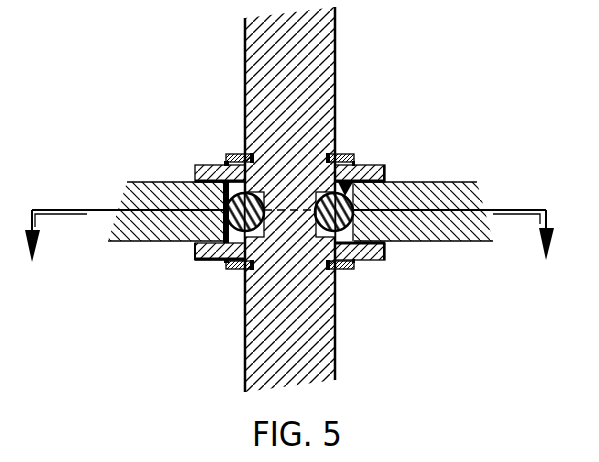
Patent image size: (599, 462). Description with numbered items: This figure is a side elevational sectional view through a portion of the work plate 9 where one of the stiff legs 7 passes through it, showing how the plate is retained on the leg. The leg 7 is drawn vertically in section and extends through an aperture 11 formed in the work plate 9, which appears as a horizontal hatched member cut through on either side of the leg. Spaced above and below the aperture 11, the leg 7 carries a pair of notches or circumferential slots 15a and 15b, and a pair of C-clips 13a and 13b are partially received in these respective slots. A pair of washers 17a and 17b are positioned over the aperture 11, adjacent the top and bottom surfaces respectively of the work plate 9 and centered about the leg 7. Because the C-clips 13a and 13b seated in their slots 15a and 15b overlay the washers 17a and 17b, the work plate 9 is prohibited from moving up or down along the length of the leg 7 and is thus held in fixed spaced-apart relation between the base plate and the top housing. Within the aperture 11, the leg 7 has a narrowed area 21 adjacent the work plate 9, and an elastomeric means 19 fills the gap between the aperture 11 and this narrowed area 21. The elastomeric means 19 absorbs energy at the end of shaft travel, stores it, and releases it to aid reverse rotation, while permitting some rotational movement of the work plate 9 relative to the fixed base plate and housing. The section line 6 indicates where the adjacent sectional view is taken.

The section line 6- 6 is at (290, 252).
The leg 7 is at (256, 90).
The work plate 9 is at (130, 200).
The aperture 11 is at (352, 263).
The C-clip 13a is at (225, 155).
The C-clip 13b is at (227, 268).
The circumferential slot 15a is at (328, 153).
The circumferential slot 15b is at (257, 268).
The washer 17a is at (200, 166).
The washer 17b is at (193, 260).
The elastomeric means 19 is at (363, 163).
The narrowed area 21 is at (340, 240).